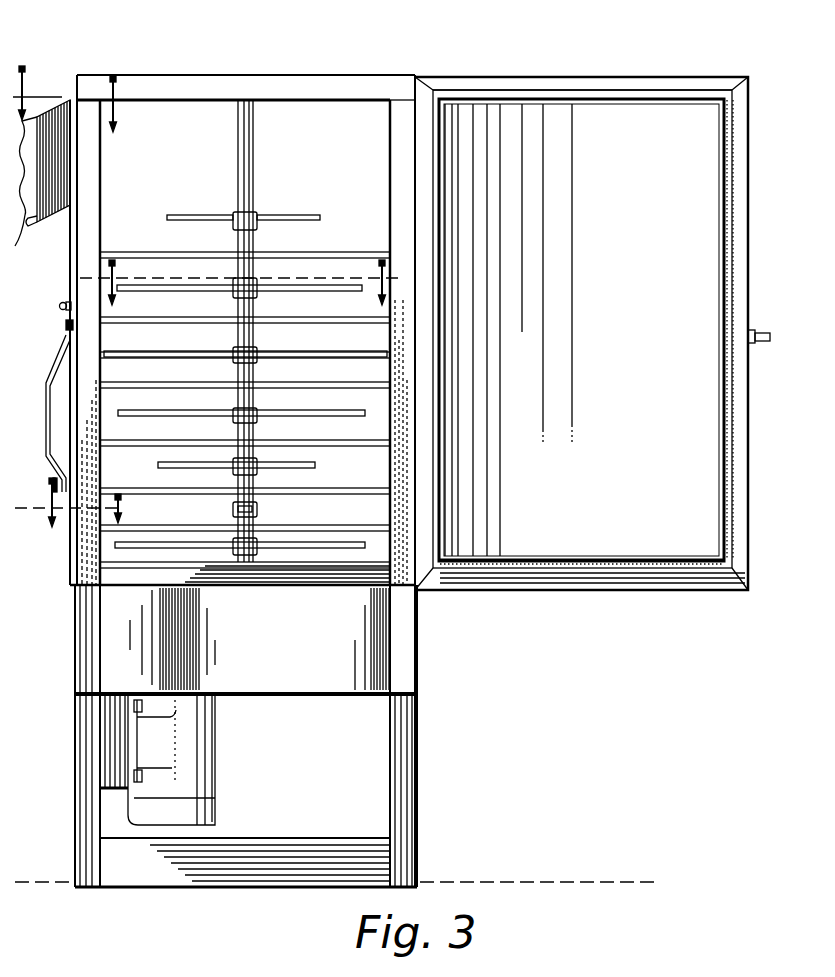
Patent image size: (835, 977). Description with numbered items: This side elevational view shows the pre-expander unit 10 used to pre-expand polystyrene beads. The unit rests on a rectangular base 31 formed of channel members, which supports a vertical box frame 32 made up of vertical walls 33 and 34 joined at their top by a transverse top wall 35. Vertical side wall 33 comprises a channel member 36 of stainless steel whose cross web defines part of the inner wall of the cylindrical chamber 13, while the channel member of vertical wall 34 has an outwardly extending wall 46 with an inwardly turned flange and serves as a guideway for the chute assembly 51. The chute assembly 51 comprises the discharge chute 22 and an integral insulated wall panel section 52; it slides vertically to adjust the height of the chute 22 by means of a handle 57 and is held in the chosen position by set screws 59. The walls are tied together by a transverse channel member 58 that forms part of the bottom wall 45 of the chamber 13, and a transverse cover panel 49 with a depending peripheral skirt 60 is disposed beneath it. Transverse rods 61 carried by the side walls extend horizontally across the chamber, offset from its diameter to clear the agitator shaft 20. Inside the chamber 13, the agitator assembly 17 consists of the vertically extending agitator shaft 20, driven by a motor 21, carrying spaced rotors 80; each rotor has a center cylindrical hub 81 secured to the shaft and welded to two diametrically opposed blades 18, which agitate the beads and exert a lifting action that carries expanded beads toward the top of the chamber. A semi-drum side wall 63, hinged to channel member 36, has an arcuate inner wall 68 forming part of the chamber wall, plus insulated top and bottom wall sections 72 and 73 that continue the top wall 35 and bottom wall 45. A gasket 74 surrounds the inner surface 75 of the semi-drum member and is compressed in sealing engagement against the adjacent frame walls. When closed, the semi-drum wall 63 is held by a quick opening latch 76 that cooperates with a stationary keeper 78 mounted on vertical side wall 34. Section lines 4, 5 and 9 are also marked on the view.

The pre-expander unit 10 is at (383, 72).
The transverse top wall 35 is at (305, 88).
The channel member 36 is at (380, 157).
The stationary keeper 78 is at (102, 340).
The agitator assembly 17 is at (153, 245).
The transverse rods 61 is at (330, 256).
The transverse cover panel 49 is at (238, 589).
The transverse channel member 58 is at (155, 568).
The agitator shaft 20 is at (254, 145).
The center cylindrical hub 81 is at (255, 361).
The rotor 80 is at (205, 215).
The chute assembly 51 is at (268, 213).
The blades 18 is at (304, 280).
The bottom wall 45 is at (367, 548).
The discharge chute 22 is at (26, 193).
The set screws 59 is at (60, 306).
The insulated wall panel section 52 is at (60, 324).
The handle 57 is at (50, 391).
The outwardly extending wall 46 is at (85, 559).
The vertical wall 34 is at (82, 755).
The depending peripheral skirt 60 is at (355, 628).
The vertical box frame 32 is at (428, 733).
The vertical side wall 33 is at (403, 778).
The rectangular base 31 is at (305, 855).
The motor 21 is at (200, 746).
The semi-drum side wall 63 is at (640, 80).
The top wall section 72 is at (542, 78).
The inner surface 75 is at (740, 200).
The gasket 74 is at (725, 253).
The cylindrical chamber 13 is at (392, 368).
The bottom wall section 73 is at (616, 560).
The arcuate inner wall 68 is at (626, 381).
The quick opening latch 76 is at (762, 343).
The section line 4 is at (77, 97).
The section line 9 is at (240, 290).
The section line 5 is at (78, 507).